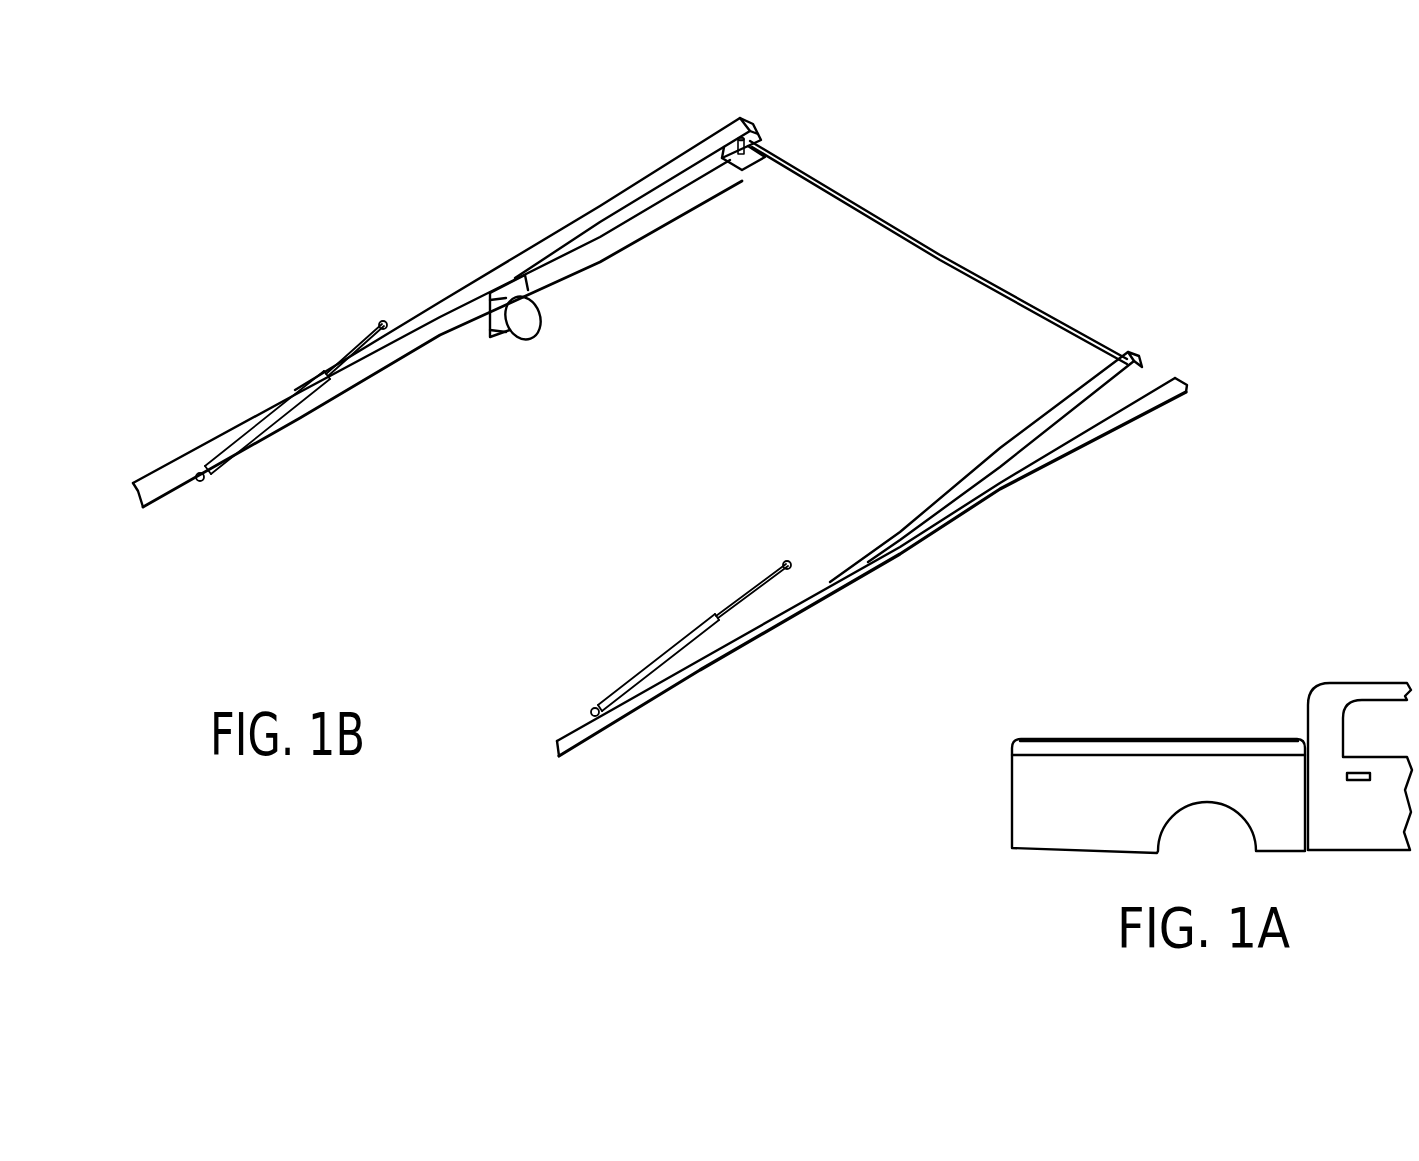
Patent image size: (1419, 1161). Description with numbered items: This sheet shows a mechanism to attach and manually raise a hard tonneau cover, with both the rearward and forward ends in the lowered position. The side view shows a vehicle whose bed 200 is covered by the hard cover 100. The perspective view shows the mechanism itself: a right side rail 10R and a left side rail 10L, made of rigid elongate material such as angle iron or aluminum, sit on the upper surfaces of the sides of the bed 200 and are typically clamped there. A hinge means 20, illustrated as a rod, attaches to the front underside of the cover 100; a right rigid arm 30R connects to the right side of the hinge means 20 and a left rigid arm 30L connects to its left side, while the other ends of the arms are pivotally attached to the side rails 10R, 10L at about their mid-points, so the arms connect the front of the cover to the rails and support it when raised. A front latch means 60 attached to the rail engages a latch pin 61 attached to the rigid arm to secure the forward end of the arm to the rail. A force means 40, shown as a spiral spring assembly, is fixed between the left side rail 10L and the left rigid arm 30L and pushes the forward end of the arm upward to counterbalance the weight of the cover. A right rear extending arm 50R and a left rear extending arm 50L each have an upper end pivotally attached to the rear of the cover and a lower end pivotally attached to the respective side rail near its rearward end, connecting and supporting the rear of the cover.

In FIG. 1B, the left side rail 10L is at (410, 346).
In FIG. 1B, the right side rail 10R is at (690, 667).
In FIG. 1B, the hinge means 20 is at (925, 249).
In FIG. 1B, the left rigid arm 30L is at (698, 157).
In FIG. 1B, the right rigid arm 30R is at (1140, 360).
In FIG. 1B, the force means 40 is at (528, 318).
In FIG. 1B, the left rear extending arm 50L is at (383, 325).
In FIG. 1B, the right rear extending arm 50R is at (703, 622).
In FIG. 1B, the front latch means 60 is at (746, 170).
In FIG. 1B, the latch pin 61 is at (757, 147).
In FIG. 1A, the hard cover 100 is at (1133, 748).
In FIG. 1A, the vehicle bed 200 is at (1030, 817).